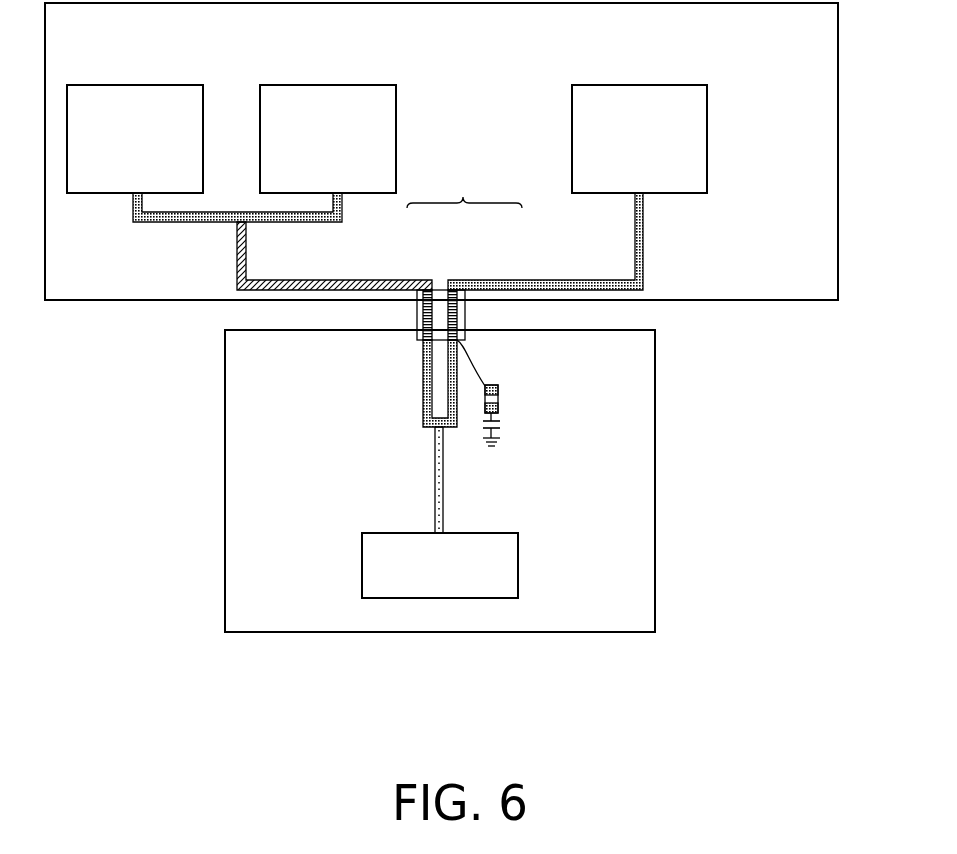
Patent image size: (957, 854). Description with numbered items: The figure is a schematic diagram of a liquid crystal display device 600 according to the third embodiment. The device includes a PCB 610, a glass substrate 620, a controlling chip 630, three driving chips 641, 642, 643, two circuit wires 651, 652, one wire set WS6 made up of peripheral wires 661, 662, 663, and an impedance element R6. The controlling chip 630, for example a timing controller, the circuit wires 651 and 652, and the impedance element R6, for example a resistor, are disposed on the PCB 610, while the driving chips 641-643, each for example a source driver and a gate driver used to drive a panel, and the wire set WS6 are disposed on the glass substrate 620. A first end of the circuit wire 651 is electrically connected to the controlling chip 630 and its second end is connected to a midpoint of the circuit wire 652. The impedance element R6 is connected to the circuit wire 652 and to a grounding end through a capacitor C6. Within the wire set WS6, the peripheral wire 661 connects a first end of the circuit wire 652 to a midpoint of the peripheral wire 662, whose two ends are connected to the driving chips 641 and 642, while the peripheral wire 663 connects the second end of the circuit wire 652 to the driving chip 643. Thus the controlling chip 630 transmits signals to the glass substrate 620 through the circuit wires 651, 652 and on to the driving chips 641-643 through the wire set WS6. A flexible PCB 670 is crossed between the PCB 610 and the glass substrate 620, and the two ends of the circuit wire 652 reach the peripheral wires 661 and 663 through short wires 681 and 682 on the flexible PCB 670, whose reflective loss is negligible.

The liquid crystal display device 600 is at (775, 659).
The PCB 610 is at (655, 453).
The glass substrate 620 is at (838, 143).
The controlling chip 630 is at (518, 557).
The driving chip 641 is at (127, 85).
The driving chip 642 is at (320, 85).
The driving chip 643 is at (647, 86).
The circuit wire 651 is at (443, 462).
The circuit wire 652 is at (423, 424).
The peripheral wire 661 is at (412, 282).
The peripheral wire 662 is at (345, 203).
The peripheral wire 663 is at (513, 282).
The flexible PCB 670 is at (417, 333).
The wire 681 is at (426, 342).
The wire 682 is at (462, 335).
The impedance element R6 is at (498, 397).
The capacitor C6 is at (500, 427).
The wire set WS6 is at (464, 185).